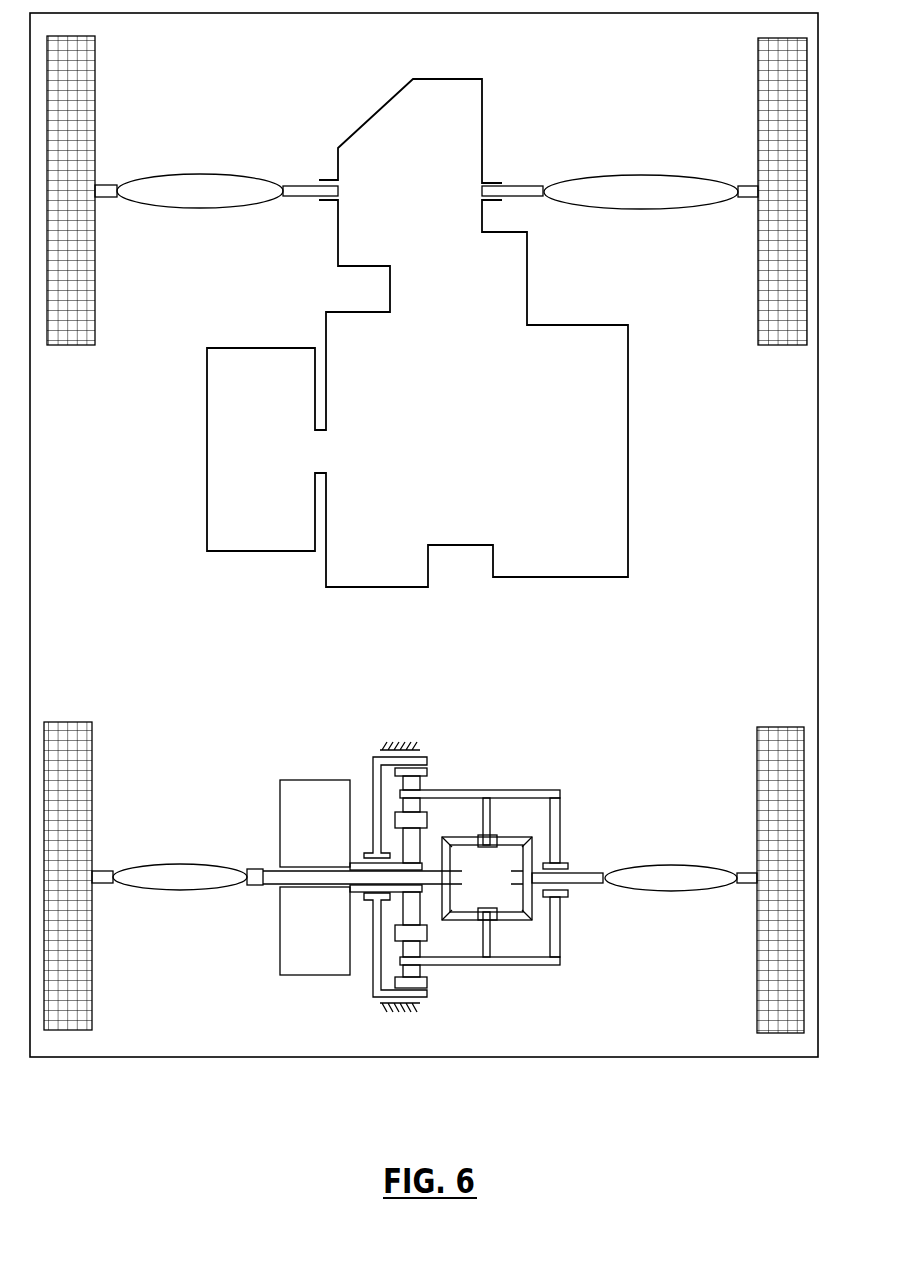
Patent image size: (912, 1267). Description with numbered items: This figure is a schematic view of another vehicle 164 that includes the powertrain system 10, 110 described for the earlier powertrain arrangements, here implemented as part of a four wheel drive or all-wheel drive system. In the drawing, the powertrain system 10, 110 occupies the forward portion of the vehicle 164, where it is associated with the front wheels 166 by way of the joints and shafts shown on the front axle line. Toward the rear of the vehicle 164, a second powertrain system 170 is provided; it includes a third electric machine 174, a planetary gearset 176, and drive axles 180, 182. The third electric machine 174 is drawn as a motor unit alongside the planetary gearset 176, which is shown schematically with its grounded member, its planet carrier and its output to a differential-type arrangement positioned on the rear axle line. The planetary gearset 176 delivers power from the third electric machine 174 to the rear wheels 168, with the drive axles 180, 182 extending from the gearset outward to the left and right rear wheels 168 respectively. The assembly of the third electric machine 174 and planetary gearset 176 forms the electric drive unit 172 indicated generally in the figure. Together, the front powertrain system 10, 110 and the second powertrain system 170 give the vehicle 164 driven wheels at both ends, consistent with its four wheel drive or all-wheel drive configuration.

The powertrain system 10 is at (473, 351).
The powertrain system 110 is at (628, 552).
The vehicle 164 is at (820, 998).
The front wheels 166 is at (75, 340).
The rear wheels 168 is at (67, 720).
The second powertrain system 170 is at (210, 193).
The electric drive unit 172 is at (418, 844).
The third electric machine 174 is at (317, 778).
The planetary gearset 176 is at (522, 752).
The drive axle 180 is at (262, 882).
The drive axle 182 is at (585, 883).